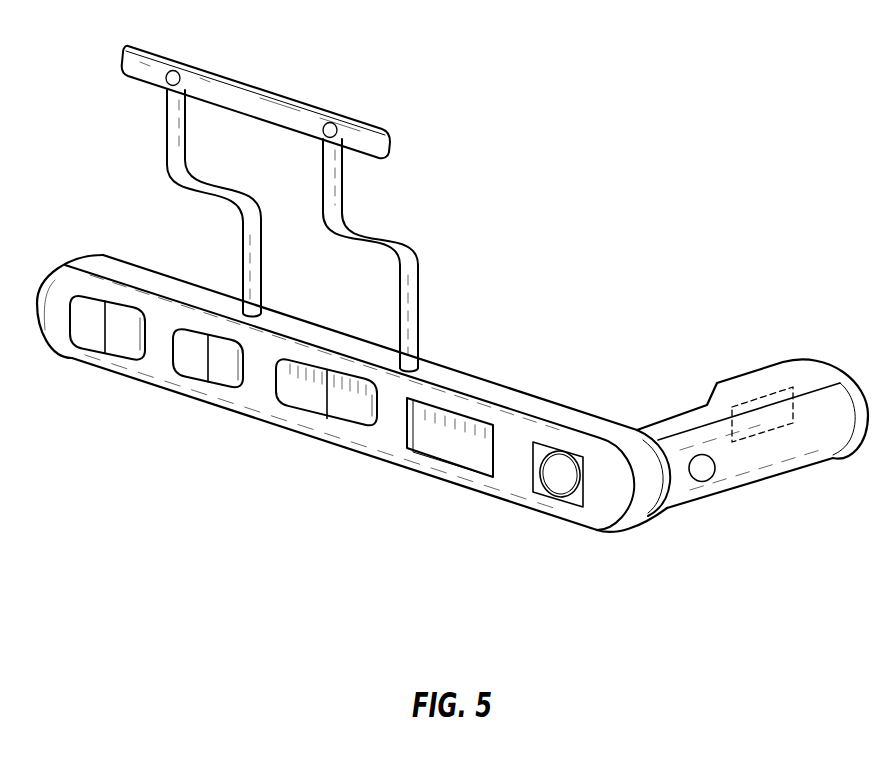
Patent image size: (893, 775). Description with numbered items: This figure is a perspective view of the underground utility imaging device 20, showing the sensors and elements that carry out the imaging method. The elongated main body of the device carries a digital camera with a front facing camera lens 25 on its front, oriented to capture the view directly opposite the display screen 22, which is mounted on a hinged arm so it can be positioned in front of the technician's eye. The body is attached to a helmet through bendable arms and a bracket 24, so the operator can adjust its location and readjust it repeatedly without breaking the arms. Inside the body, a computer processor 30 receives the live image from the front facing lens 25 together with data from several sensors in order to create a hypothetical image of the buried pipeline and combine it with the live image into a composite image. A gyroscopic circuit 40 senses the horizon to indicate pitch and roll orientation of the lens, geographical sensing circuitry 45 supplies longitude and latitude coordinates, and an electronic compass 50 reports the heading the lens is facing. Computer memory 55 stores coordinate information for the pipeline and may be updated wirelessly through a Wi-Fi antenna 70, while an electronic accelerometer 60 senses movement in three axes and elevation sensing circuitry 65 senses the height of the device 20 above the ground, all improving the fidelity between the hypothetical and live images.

The underground utility imaging device 20 is at (661, 74).
The display screen 22 is at (820, 370).
The bracket 24 is at (263, 90).
The front facing camera lens 25 is at (702, 472).
The computer processor 30 is at (457, 447).
The gyroscopic circuit 40 is at (553, 483).
The geographical sensing circuitry 45 is at (350, 415).
The electronic compass 50 is at (307, 395).
The computer memory 55 is at (230, 375).
The electronic accelerometer 60 is at (190, 355).
The elevation sensing circuitry 65 is at (127, 340).
The Wi-Fi antenna 70 is at (83, 322).